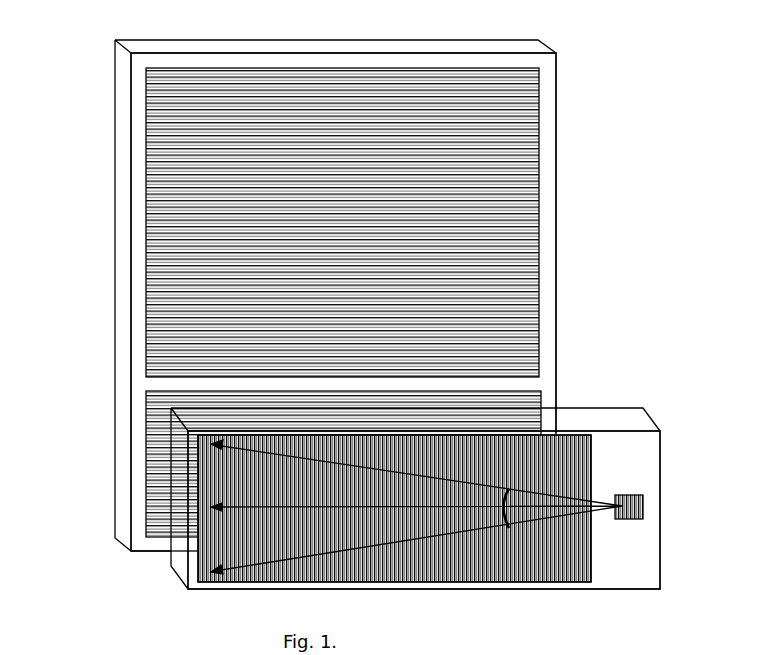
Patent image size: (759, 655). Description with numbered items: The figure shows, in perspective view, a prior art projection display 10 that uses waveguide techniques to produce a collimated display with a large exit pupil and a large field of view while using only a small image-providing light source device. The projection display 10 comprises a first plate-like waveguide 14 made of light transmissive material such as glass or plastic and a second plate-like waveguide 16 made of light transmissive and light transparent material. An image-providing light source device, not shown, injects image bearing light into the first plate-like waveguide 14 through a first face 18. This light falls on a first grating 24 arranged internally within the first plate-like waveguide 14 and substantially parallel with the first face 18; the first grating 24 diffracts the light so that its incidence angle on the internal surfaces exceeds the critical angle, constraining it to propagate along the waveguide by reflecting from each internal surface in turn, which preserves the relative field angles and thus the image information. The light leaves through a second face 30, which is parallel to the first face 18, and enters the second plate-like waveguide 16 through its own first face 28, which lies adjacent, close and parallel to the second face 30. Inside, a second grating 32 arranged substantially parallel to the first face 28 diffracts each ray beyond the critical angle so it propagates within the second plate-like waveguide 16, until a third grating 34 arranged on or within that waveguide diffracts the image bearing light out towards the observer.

The projection display 10 is at (611, 133).
The first plate-like waveguide 14 is at (628, 412).
The second plate-like waveguide 16 is at (541, 63).
The first face 18 is at (628, 563).
The first grating 24 is at (537, 555).
The first face 28 is at (548, 313).
The second face 30 is at (585, 386).
The second grating 32 is at (145, 434).
The third grating 34 is at (177, 245).